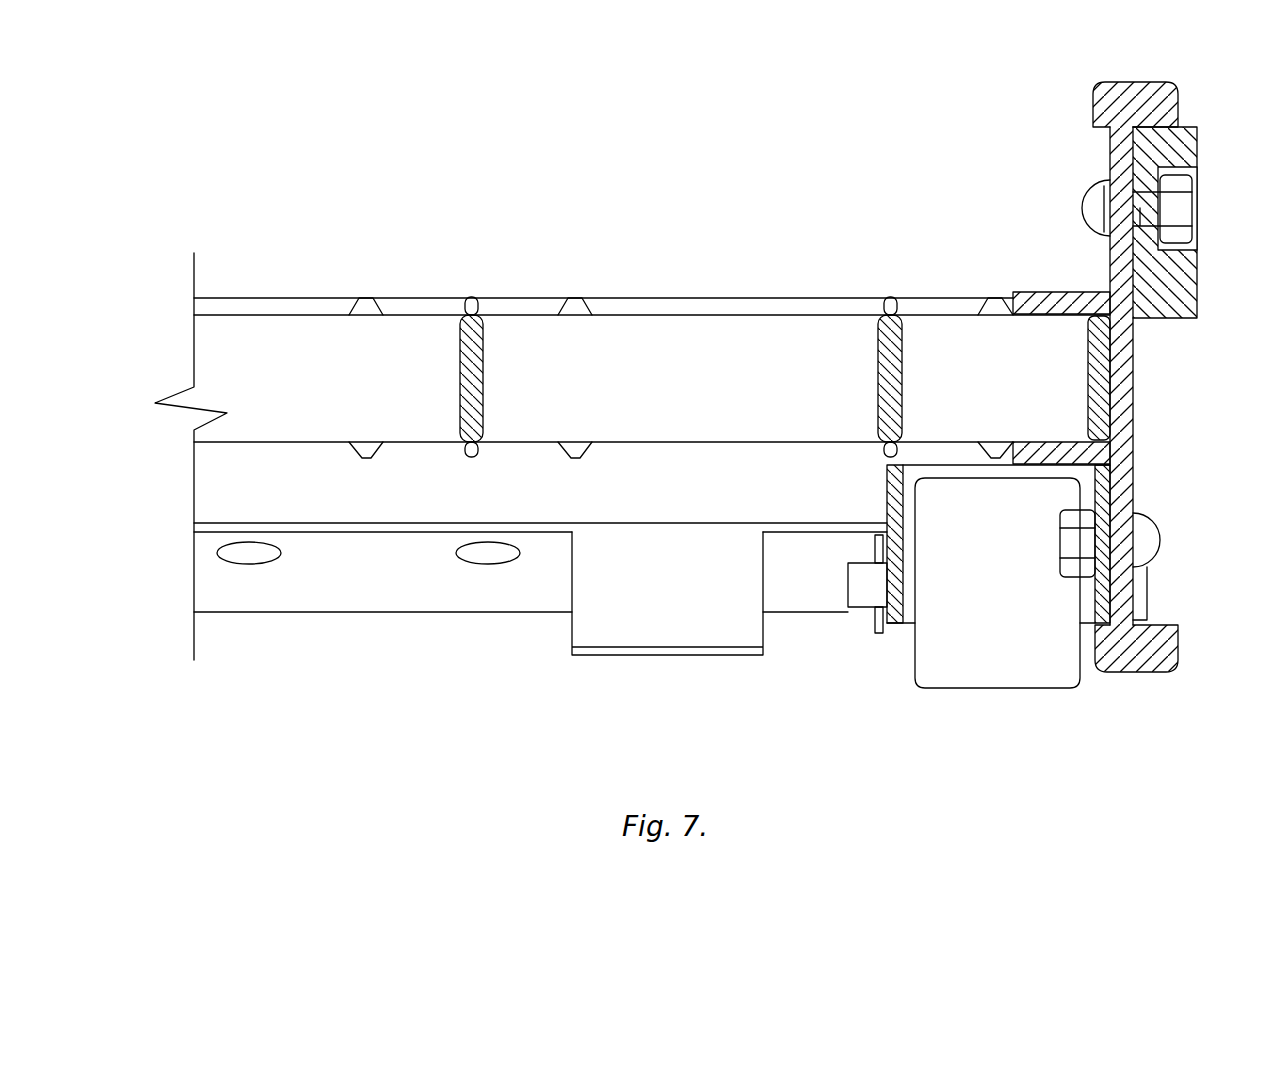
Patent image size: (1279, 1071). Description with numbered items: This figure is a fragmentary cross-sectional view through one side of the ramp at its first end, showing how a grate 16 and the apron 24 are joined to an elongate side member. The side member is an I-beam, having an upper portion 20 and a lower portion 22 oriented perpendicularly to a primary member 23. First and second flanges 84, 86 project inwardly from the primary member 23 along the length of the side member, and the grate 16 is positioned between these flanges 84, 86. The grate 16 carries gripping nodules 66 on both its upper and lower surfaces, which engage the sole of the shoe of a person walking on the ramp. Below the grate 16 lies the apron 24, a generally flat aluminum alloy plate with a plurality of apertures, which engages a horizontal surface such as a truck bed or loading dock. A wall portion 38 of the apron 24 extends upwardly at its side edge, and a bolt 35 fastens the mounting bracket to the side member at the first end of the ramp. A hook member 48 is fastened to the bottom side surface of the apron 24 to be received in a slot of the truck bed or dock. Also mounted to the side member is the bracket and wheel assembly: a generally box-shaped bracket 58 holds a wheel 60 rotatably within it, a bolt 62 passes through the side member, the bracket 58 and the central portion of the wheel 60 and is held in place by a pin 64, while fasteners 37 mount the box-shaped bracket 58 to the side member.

The grate 16 is at (690, 330).
The upper portion 20 is at (1138, 83).
The lower portion 22 is at (1140, 665).
The primary member 23 is at (1125, 388).
The apron 24 is at (381, 593).
The bolt 35 is at (1095, 195).
The fastener 37 is at (1150, 540).
The wall portion 38 is at (1183, 132).
The hook member 48 is at (615, 633).
The box-shaped bracket 58 is at (890, 505).
The wheel 60 is at (1010, 688).
The bolt 62 is at (860, 590).
The pin 64 is at (880, 635).
The gripping nodule 66 is at (366, 300).
The first flange 84 is at (1045, 298).
The second flange 86 is at (1043, 455).